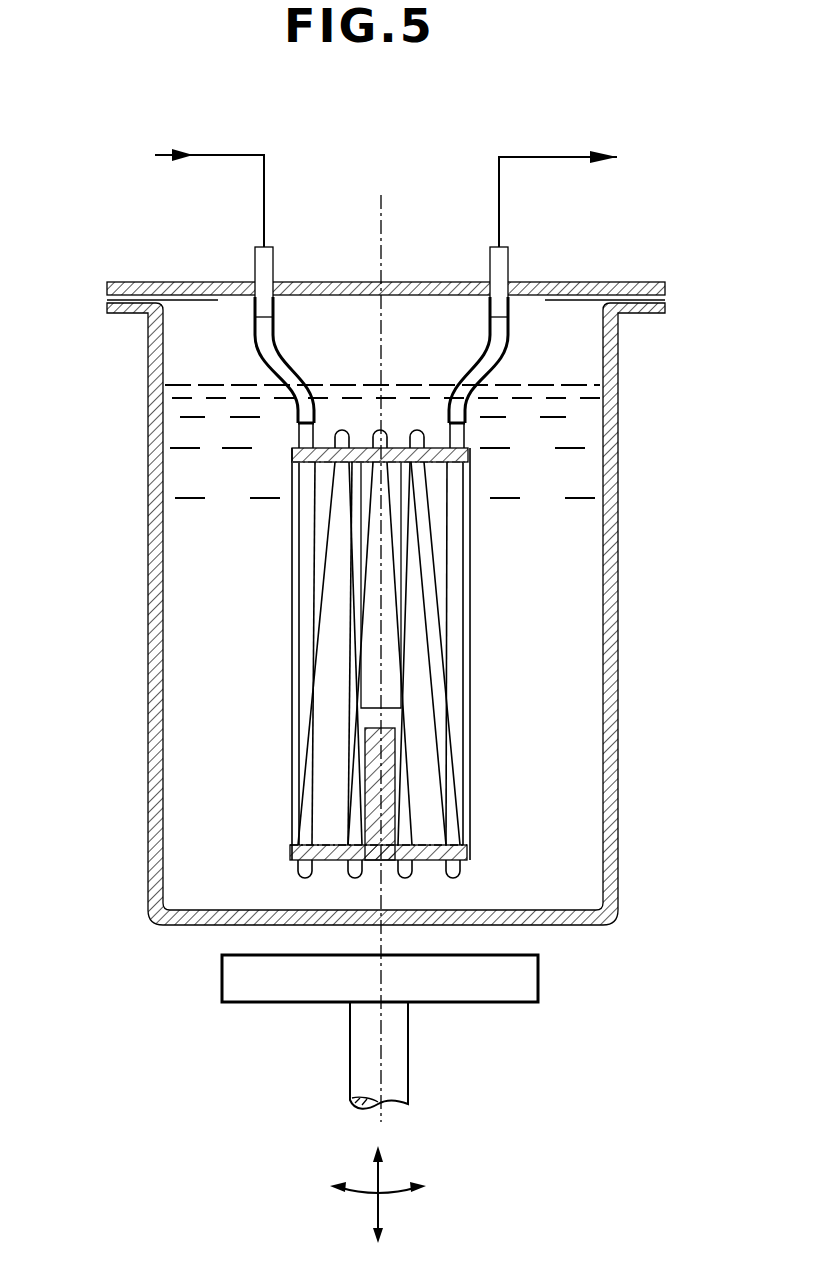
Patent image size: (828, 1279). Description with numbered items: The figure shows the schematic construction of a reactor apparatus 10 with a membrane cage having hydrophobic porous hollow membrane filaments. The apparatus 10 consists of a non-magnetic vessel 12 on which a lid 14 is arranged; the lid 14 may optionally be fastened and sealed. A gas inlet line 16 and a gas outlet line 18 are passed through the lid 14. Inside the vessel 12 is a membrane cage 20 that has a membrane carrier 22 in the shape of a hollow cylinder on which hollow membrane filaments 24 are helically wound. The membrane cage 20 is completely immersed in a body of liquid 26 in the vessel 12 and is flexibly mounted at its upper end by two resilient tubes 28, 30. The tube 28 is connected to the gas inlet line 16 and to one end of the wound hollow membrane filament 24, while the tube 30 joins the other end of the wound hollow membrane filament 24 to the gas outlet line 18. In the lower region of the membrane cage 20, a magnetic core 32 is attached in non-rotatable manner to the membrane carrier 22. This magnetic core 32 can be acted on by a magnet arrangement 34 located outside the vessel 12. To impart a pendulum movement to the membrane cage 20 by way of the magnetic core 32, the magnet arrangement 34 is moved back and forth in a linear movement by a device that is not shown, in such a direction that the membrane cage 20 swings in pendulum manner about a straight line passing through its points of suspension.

The apparatus 10 is at (640, 450).
The vessel 12 is at (148, 654).
The lid 14 is at (167, 283).
The gas inlet line 16 is at (225, 152).
The gas outlet line 18 is at (568, 153).
The membrane cage 20 is at (381, 654).
The membrane carrier 22 is at (293, 452).
The hollow membrane filaments 24 is at (455, 652).
The body of liquid 26 is at (181, 385).
The resilient tube 28 is at (282, 368).
The resilient tube 30 is at (472, 370).
The magnetic core 32 is at (395, 750).
The magnet arrangement 34 is at (560, 1009).